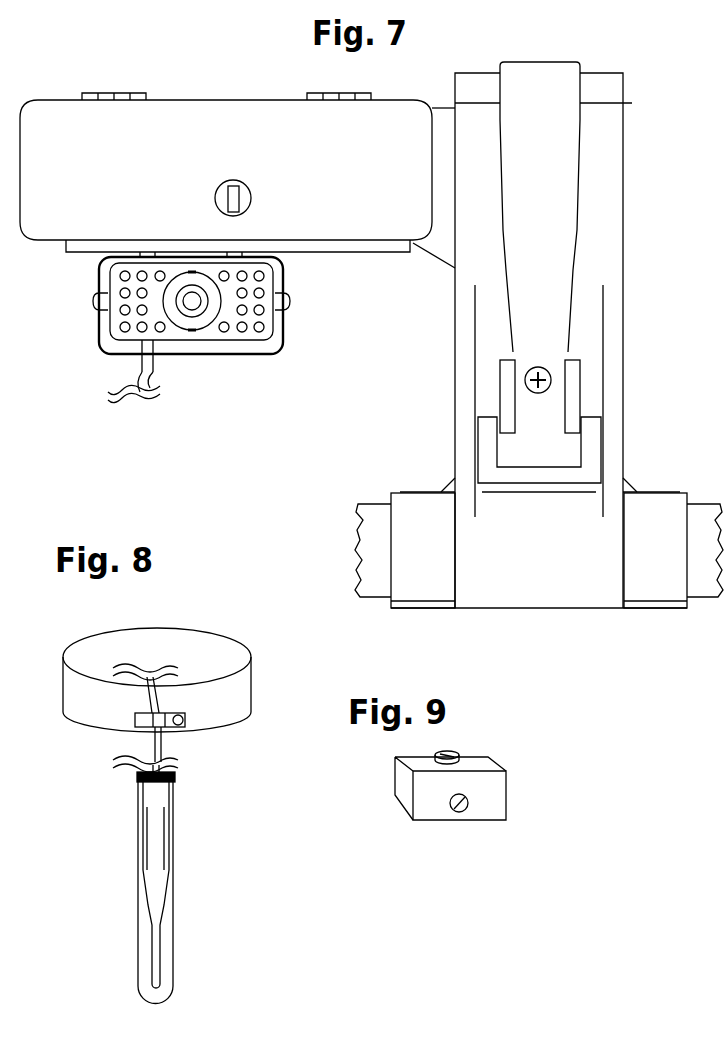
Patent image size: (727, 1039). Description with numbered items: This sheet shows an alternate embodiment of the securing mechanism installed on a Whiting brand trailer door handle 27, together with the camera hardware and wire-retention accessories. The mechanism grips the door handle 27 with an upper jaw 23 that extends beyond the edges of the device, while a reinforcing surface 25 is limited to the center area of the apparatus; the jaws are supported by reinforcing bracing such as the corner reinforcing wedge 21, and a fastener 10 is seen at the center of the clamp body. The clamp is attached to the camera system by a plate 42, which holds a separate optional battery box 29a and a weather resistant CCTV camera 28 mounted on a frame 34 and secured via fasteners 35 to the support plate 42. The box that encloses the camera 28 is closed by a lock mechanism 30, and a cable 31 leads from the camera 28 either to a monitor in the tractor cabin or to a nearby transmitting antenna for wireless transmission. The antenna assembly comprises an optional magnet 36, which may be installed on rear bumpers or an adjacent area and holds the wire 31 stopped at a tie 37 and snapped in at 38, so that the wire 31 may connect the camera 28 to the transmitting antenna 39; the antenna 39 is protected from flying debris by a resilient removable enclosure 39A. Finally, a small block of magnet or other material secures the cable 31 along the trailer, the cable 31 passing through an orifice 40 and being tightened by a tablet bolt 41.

In FIG. 7, the battery box 29a is at (232, 128).
In FIG. 7, the plate 42 is at (438, 118).
In FIG. 7, the lock mechanism 30 is at (252, 191).
In FIG. 7, the fasteners 35 is at (233, 251).
In FIG. 7, the frame 34 is at (98, 266).
In FIG. 7, the CCTV camera 28 is at (120, 316).
In FIG. 7, the cable 31 is at (160, 371).
In FIG. 8, the cable 31 is at (163, 700).
In FIG. 7, the fastener 10 is at (543, 368).
In FIG. 7, the corner reinforcing wedge 21 is at (446, 478).
In FIG. 7, the door handle 27 is at (376, 518).
In FIG. 7, the upper jaw 23 is at (662, 504).
In FIG. 7, the reinforcing surface 25 is at (561, 590).
In FIG. 8, the magnet 36 is at (184, 650).
In FIG. 8, the snap 38 is at (181, 724).
In FIG. 8, the tie 37 is at (171, 727).
In FIG. 8, the transmitting antenna 39 is at (163, 846).
In FIG. 8, the resilient removable enclosure 39A is at (168, 958).
In FIG. 9, the tablet bolt 41 is at (458, 750).
In FIG. 9, the orifice 40 is at (459, 812).